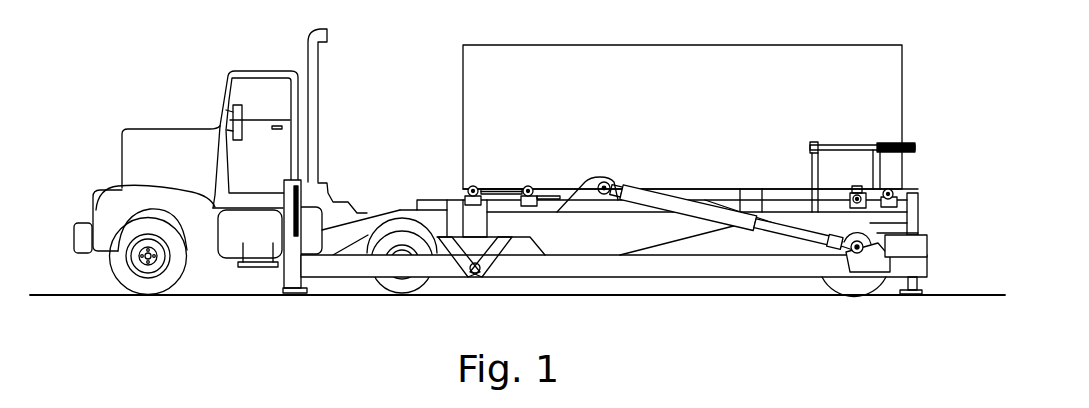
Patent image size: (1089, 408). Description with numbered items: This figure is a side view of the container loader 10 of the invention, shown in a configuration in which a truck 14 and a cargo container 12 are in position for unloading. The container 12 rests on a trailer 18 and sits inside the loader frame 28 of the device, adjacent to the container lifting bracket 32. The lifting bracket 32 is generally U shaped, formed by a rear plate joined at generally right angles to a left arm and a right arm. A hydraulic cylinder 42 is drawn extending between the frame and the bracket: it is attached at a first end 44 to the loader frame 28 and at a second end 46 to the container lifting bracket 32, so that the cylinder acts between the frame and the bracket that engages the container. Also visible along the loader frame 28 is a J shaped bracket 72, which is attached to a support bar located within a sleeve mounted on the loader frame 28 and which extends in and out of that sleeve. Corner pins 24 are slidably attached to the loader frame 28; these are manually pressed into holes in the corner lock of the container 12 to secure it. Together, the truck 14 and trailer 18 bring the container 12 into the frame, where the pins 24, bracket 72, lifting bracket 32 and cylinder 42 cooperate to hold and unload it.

The container loader 10 is at (962, 103).
The cargo container 12 is at (903, 98).
The truck 14 is at (176, 139).
The trailer 18 is at (455, 206).
The corner pins 24 is at (473, 186).
The loader frame 28 is at (567, 267).
The container lifting bracket 32 is at (910, 210).
The hydraulic cylinder 42 is at (760, 223).
The first end 44 is at (830, 243).
The second end 46 is at (636, 184).
The J shaped bracket 72 is at (530, 186).